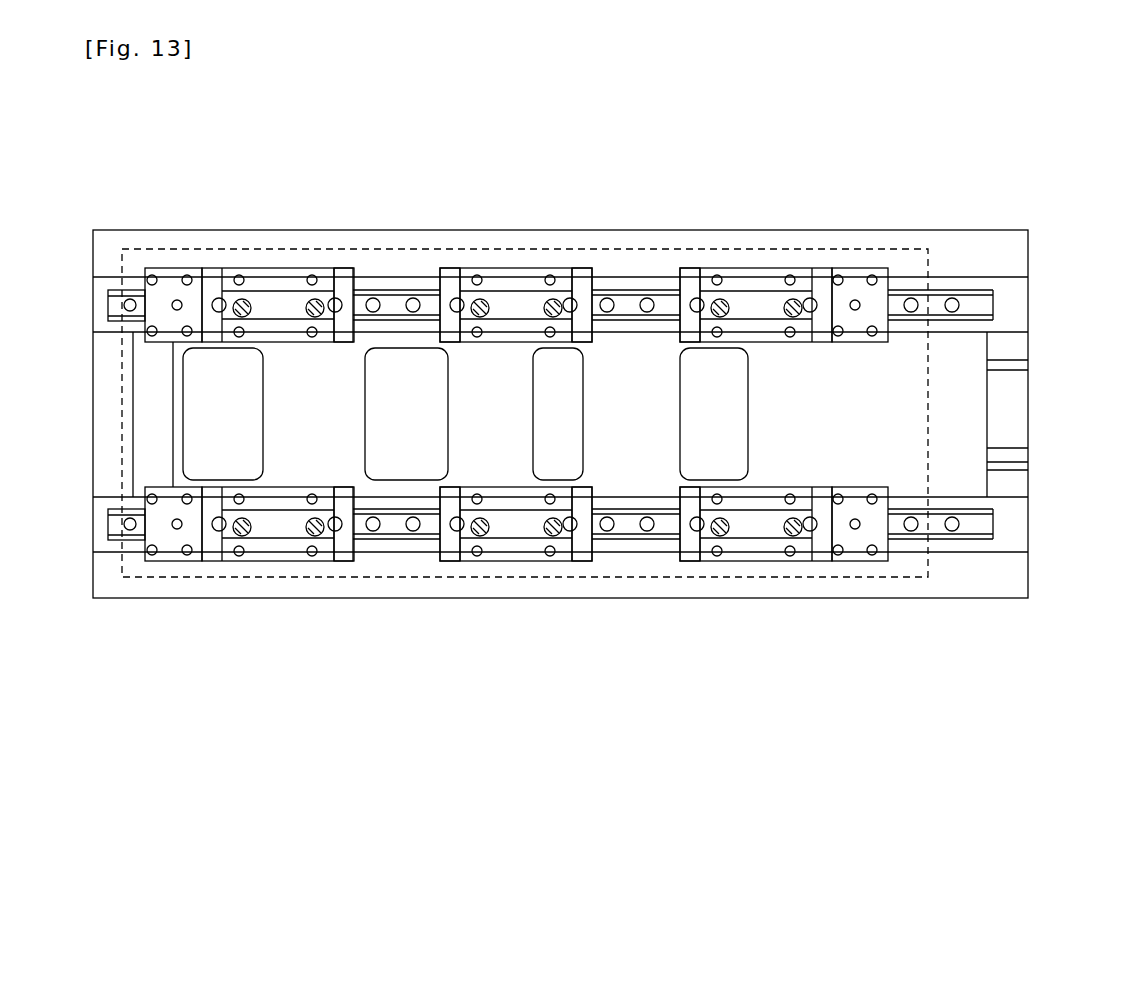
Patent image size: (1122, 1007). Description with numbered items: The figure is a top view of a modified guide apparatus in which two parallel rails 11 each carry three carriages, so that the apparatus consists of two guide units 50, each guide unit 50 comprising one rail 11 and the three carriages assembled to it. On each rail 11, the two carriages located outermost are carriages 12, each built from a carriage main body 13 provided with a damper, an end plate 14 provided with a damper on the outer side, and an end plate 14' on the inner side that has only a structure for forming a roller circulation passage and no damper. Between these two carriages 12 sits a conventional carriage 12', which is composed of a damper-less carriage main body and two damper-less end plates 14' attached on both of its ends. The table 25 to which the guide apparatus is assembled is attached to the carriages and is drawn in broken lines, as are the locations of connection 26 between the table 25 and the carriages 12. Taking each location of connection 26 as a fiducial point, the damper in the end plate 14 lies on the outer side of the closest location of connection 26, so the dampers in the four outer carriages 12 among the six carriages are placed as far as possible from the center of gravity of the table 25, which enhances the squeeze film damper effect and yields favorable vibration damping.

The rail 11 is at (112, 312).
The carriage 12 is at (525, 420).
The conventional carriage 12' is at (520, 420).
The carriage main body 13 is at (270, 278).
The end plate 14 is at (516, 417).
The end plate 14' is at (523, 417).
The table 25 is at (928, 418).
The location of connection 26 is at (248, 316).
The guide unit 50 is at (949, 259).